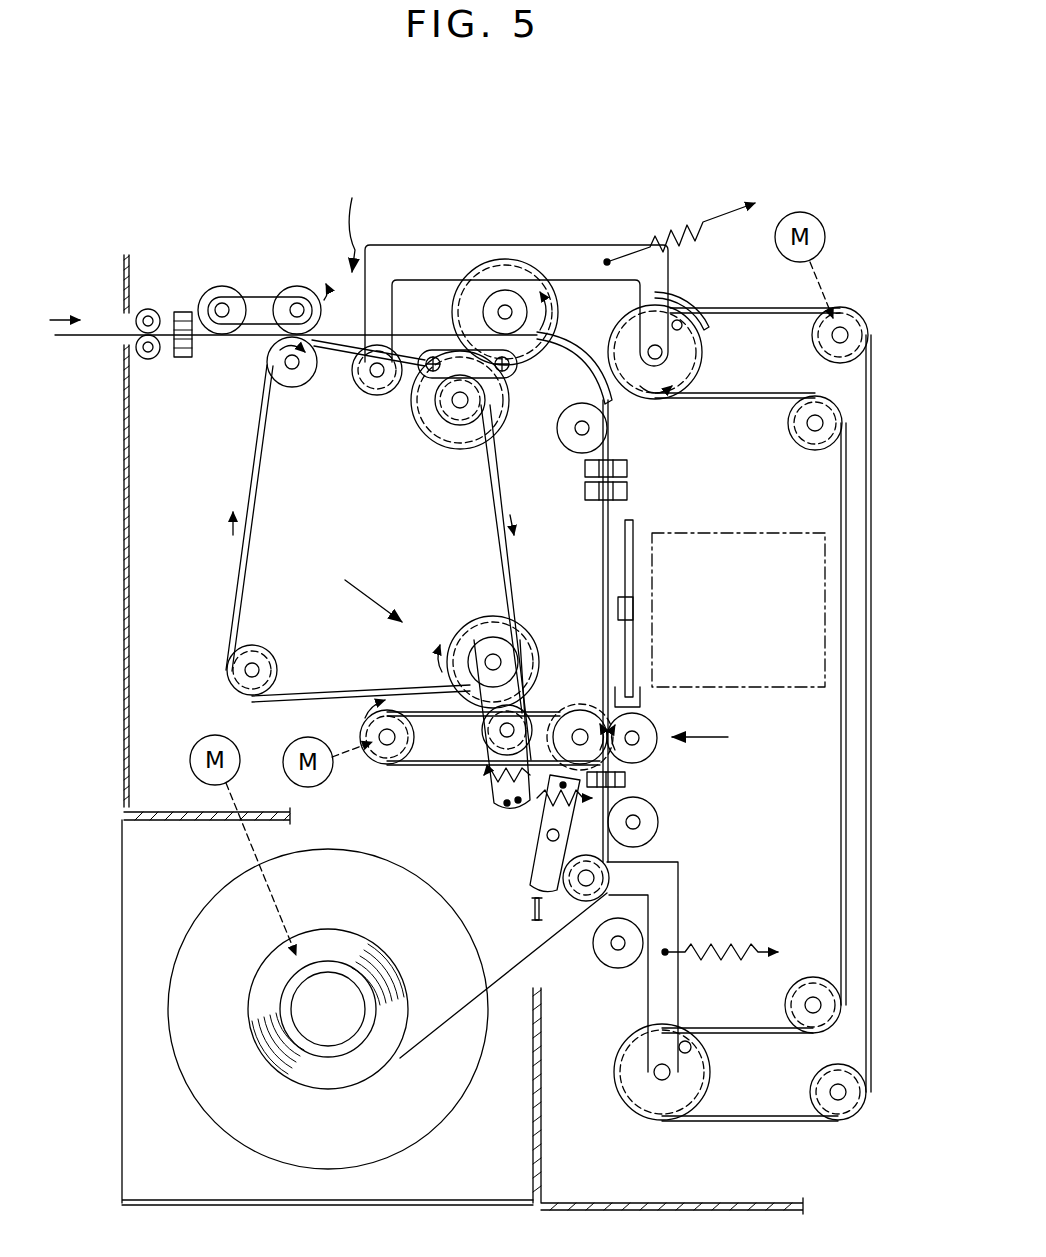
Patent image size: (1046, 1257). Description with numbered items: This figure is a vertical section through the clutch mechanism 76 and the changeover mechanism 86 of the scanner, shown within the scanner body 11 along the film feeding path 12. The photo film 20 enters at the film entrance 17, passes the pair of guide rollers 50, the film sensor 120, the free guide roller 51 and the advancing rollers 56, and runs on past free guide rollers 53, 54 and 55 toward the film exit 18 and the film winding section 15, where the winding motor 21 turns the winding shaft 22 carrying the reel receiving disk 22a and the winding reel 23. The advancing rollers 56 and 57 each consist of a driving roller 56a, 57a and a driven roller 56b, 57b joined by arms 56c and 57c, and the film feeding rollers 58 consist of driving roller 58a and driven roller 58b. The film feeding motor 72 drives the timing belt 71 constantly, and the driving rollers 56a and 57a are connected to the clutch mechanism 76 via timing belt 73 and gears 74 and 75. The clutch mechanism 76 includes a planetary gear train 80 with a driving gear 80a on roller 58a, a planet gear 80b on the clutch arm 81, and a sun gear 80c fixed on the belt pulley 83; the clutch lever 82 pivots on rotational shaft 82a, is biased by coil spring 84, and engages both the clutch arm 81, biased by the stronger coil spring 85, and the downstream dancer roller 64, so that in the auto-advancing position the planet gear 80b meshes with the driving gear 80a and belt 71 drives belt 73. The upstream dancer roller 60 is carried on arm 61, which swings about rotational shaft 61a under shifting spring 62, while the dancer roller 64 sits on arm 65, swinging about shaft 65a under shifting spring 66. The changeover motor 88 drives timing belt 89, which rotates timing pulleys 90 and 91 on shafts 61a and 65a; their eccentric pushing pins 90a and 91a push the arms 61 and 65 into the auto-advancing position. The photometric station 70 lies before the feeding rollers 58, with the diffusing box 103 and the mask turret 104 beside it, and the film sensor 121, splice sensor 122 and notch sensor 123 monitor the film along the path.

The scanner body 11 is at (122, 578).
The film feeding path 12 is at (349, 218).
The film winding section 15 is at (435, 1142).
The film entrance 17 is at (127, 323).
The film exit 18 is at (540, 965).
The photo film 20 is at (88, 338).
The winding motor 21 is at (212, 735).
The winding shaft 22 is at (303, 1005).
The reel receiving disk 22a is at (230, 898).
The winding reel 23 is at (330, 1052).
The guide rollers 50 is at (146, 362).
The free guide roller 51 is at (222, 286).
The free guide roller 53 is at (566, 446).
The free guide roller 54 is at (660, 822).
The free guide roller 55 is at (618, 968).
The advancing rollers 56 is at (290, 395).
The driving roller 56a is at (268, 362).
The driven roller 56b is at (297, 286).
The arm 56c is at (258, 298).
The advancing rollers 57 is at (519, 283).
The driving roller 57a is at (493, 300).
The driven roller 57b is at (571, 416).
The arm 57c is at (411, 402).
The film feeding rollers 58 is at (718, 733).
The driving roller 58a is at (640, 720).
The driven roller 58b is at (660, 760).
The upstream dancer roller 60 is at (368, 397).
The arm 61 is at (607, 260).
The rotational shaft 61a is at (670, 353).
The shifting spring 62 is at (712, 252).
The downstream dancer roller 64 is at (609, 880).
The arm 65 is at (678, 922).
The shaft 65a is at (652, 1072).
The shifting spring 66 is at (730, 963).
The photometric station 70 is at (597, 546).
The timing belt 71 is at (415, 766).
The film feeding motor 72 is at (302, 744).
The timing belt 73 is at (238, 572).
The gear 74 is at (447, 465).
The gear 75 is at (557, 307).
The clutch mechanism 76 is at (358, 589).
The planetary gear train 80 is at (523, 612).
The driving gear 80a is at (583, 700).
The planet gear 80b is at (447, 680).
The sun gear 80c is at (480, 613).
The clutch arm 81 is at (500, 806).
The clutch lever 82 is at (531, 895).
The rotational shaft 82a is at (541, 857).
The belt pulley 83 is at (467, 647).
The coil spring 84 is at (482, 787).
The coil spring 85 is at (535, 807).
The changeover mechanism 86 is at (853, 285).
The changeover motor 88 is at (805, 212).
The timing belt 89 is at (760, 400).
The timing pulley 90 is at (644, 400).
The pushing pin 90a is at (707, 333).
The timing pulley 91 is at (663, 1122).
The pushing pin 91a is at (692, 1050).
The diffusing box 103 is at (745, 530).
The mask turret 104 is at (634, 520).
The film sensor 120 is at (182, 310).
The film sensor 121 is at (627, 782).
The splice sensor 122 is at (628, 468).
The notch sensor 123 is at (628, 492).